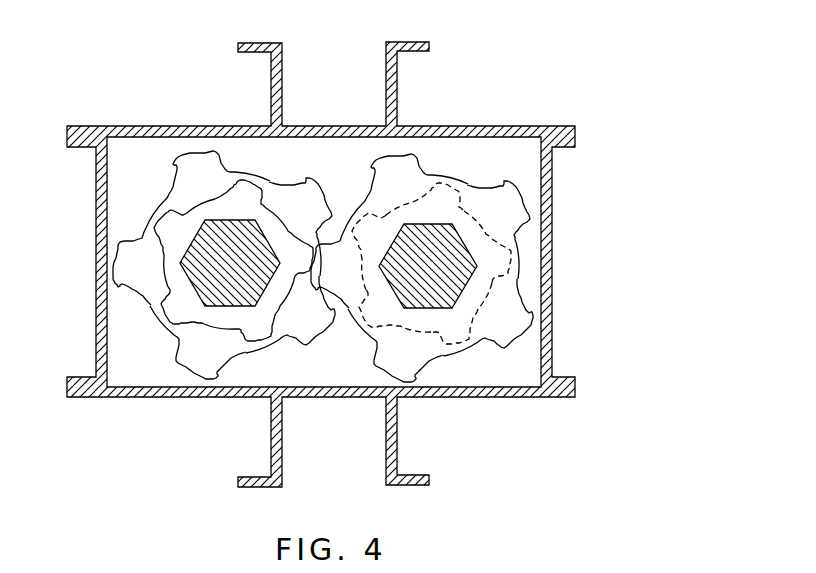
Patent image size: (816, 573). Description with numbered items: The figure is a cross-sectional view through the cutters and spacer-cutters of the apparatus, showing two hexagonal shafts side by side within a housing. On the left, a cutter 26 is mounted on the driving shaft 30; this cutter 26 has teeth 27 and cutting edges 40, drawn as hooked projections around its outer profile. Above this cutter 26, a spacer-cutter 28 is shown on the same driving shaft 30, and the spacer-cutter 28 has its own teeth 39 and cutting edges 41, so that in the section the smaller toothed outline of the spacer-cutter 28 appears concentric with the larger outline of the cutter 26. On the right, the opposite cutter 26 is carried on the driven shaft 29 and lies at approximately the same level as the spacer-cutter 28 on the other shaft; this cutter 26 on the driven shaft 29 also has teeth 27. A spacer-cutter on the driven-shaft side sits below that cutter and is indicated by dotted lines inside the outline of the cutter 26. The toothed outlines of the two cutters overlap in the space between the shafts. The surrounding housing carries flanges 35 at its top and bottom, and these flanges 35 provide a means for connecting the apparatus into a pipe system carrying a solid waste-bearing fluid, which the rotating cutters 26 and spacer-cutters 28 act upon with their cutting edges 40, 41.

The cutter 26 is at (143, 277).
The teeth 27 is at (180, 360).
The spacer-cutter 28 is at (203, 313).
The driven shaft 29 is at (427, 300).
The driving shaft 30 is at (246, 269).
The flanges 35 is at (396, 47).
The teeth 39 is at (165, 312).
The cutting edges 40 is at (172, 362).
The cutting edges 41 is at (178, 184).